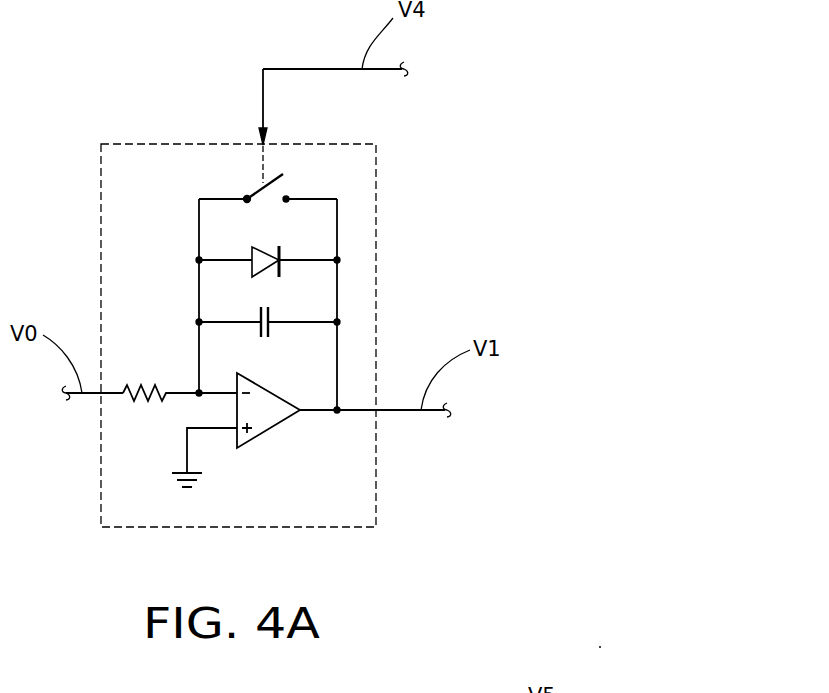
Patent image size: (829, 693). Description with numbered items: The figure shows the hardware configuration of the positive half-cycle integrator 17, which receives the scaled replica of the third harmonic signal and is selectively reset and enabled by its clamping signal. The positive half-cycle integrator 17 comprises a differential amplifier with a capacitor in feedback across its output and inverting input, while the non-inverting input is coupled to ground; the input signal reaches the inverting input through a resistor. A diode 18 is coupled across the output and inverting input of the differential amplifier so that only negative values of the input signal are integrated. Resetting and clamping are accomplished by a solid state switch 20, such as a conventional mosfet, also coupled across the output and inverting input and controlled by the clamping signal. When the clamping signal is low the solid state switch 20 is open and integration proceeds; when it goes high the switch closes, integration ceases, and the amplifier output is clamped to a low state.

The positive half-cycle integrator 17 is at (414, 203).
The diode 18 is at (250, 251).
The solid state switch 20 is at (256, 188).